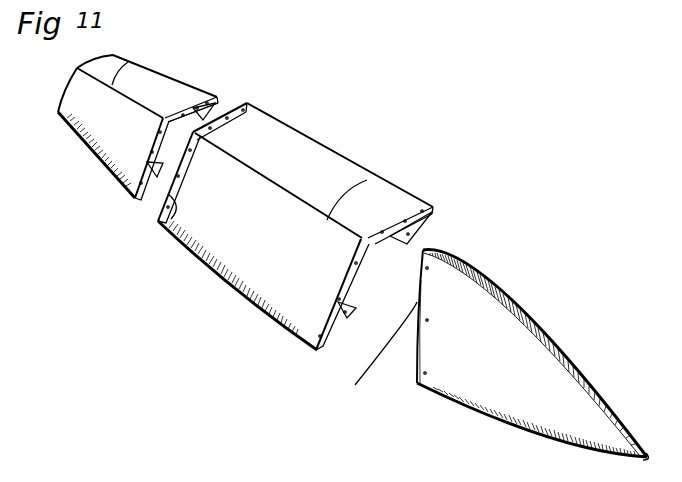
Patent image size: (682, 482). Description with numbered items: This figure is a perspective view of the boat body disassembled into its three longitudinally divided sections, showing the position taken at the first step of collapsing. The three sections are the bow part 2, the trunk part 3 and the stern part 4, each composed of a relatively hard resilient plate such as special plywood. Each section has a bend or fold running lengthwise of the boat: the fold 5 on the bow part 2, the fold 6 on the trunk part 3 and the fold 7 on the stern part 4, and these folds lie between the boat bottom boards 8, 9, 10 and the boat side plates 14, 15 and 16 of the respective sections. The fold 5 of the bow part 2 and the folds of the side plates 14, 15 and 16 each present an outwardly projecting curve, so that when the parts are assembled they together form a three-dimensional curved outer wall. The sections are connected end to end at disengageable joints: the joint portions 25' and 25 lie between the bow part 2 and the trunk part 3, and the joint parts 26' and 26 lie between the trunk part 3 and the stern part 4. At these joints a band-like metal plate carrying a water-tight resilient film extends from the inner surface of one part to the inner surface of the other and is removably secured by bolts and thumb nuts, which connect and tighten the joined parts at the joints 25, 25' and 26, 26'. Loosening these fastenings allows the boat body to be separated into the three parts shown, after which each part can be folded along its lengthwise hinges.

The bow part 2 is at (528, 311).
The trunk part 3 is at (320, 158).
The stern part 4 is at (153, 83).
The fold 5 is at (562, 345).
The fold 6 is at (367, 180).
The fold 7 is at (128, 62).
The boat bottom board 8 is at (523, 408).
The boat bottom board 9 is at (243, 257).
The boat bottom board 10 is at (108, 135).
The boat side plate fold 14 is at (464, 411).
The boat side plate fold 15 is at (272, 323).
The boat side plate fold 16 is at (115, 180).
The joint portion 25 is at (444, 228).
The joint portion 25' is at (375, 355).
The joint part 26 is at (228, 92).
The joint part 26' is at (152, 232).